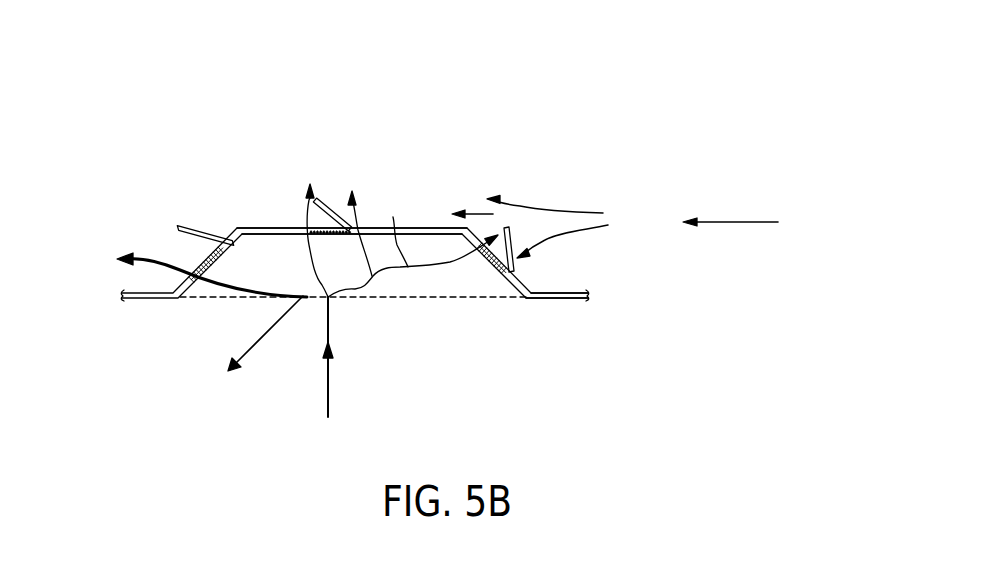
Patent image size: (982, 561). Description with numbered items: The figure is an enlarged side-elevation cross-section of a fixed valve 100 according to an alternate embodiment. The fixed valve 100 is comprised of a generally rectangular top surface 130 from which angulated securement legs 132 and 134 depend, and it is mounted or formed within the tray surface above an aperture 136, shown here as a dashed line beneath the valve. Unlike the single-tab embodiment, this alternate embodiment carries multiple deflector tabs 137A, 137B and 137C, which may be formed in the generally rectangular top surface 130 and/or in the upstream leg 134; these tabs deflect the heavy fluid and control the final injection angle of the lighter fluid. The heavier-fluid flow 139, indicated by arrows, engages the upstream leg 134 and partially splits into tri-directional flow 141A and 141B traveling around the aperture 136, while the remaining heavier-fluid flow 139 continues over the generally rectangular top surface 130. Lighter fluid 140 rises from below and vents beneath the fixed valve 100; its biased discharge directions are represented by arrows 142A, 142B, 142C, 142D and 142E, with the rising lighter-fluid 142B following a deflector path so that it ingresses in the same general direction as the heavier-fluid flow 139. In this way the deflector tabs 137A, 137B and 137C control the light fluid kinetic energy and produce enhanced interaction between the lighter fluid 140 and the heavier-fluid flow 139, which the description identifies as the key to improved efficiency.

The fixed valve 100 is at (449, 134).
The generally rectangular top surface 130 is at (425, 227).
The angulated securement leg 132 is at (222, 256).
The upstream leg 134 is at (530, 288).
The aperture 136 is at (438, 300).
The deflector tab 137A is at (196, 226).
The deflector tab 137B is at (318, 197).
The deflector tab 137C is at (505, 246).
The heavier-fluid flow 139 is at (470, 214).
The lighter fluid 140 is at (328, 385).
The tri-directional flow 141A is at (538, 205).
The tri-directional flow 141B is at (578, 233).
The lighter fluid discharge arrow 142A is at (260, 331).
The rising lighter-fluid 142B is at (147, 258).
The lighter fluid discharge arrow 142C is at (357, 206).
The lighter fluid discharge arrow 142D is at (310, 221).
The lighter fluid discharge arrow 142E is at (391, 231).